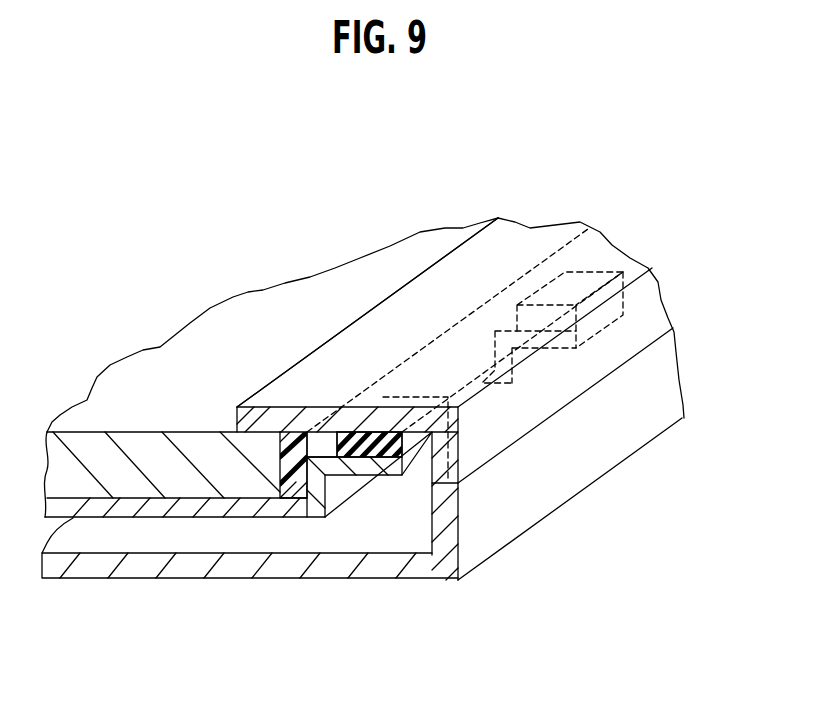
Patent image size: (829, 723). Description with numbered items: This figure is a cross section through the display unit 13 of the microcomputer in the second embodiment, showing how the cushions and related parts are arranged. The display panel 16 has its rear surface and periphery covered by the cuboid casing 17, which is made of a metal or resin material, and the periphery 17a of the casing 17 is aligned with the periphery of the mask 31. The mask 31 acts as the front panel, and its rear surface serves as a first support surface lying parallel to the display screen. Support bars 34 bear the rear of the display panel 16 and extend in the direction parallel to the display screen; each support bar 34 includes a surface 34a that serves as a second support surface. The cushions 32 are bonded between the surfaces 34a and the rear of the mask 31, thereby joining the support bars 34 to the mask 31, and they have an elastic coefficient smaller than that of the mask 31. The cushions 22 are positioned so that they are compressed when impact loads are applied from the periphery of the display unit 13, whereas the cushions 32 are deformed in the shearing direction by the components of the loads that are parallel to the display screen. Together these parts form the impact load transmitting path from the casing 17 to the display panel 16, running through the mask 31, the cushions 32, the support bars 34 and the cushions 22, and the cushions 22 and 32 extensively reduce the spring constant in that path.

The display unit 13 is at (498, 186).
The display panel 16 is at (160, 358).
The casing 17 is at (383, 583).
The periphery of the casing 17a is at (553, 475).
The cushion 22 is at (278, 463).
The mask 31 is at (643, 305).
The cushion 32 is at (593, 272).
The support bar 34 is at (537, 367).
The surface 34a is at (327, 452).